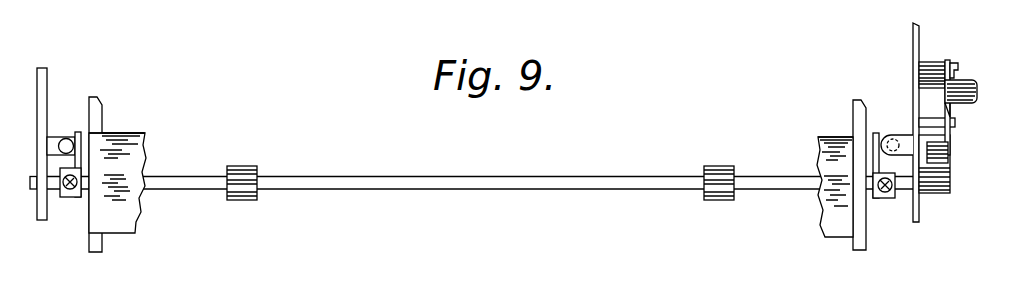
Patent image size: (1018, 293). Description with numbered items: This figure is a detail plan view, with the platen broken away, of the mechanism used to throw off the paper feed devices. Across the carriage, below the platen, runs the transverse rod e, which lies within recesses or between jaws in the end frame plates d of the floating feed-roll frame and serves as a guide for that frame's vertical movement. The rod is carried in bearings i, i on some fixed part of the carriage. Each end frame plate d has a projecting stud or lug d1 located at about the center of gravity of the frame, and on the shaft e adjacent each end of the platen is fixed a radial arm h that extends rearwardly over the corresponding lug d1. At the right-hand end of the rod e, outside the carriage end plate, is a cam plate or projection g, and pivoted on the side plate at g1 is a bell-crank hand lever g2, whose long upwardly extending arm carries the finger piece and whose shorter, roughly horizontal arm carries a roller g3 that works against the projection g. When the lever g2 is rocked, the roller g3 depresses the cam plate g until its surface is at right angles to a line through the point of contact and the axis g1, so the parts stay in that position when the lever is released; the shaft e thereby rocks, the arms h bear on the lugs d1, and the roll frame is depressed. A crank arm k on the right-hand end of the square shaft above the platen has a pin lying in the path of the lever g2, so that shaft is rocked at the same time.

The end frame plate d is at (102, 112).
The projecting stud or lug d1 is at (101, 134).
The transverse rod e is at (503, 180).
The cam plate g is at (937, 168).
The pivot g1 is at (956, 66).
The hand lever g2 is at (968, 96).
The roller g3 is at (948, 159).
The radial arm h is at (877, 133).
The bearing i is at (247, 191).
The crank arm k is at (79, 131).